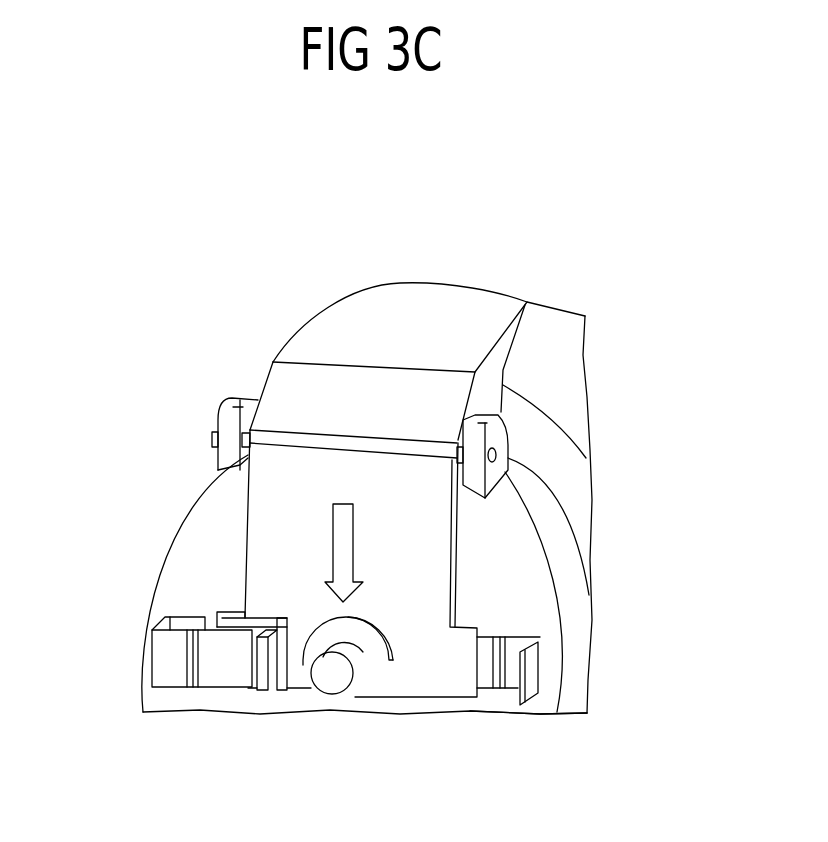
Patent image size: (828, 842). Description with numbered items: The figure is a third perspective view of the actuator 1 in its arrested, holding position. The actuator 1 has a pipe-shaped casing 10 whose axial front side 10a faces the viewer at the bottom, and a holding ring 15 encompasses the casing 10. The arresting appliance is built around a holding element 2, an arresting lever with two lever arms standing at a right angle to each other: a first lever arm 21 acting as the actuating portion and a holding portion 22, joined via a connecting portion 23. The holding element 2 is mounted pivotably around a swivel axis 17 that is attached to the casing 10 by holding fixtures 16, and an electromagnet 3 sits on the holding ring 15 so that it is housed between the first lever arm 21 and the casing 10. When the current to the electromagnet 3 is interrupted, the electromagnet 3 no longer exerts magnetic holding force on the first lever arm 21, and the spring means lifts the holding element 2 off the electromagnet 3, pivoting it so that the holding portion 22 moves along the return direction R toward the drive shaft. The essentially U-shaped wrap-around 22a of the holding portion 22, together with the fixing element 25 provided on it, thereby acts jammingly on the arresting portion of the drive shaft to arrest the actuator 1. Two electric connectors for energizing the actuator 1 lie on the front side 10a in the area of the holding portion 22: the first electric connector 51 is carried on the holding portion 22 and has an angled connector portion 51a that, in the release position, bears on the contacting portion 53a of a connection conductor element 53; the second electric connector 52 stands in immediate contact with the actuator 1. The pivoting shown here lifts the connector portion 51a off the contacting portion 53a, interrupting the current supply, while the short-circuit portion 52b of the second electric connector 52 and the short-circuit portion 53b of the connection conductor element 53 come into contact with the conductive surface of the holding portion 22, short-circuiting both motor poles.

The actuator 1 is at (592, 332).
The casing 10 is at (570, 372).
The axial front side 10a is at (547, 703).
The holding ring 15 is at (568, 473).
The holding element 2 is at (265, 347).
The first lever arm 21 is at (435, 300).
The connecting portion 23 is at (327, 382).
The electromagnet 3 is at (497, 403).
The holding fixtures 16 is at (227, 422).
The swivel axis 17 is at (212, 437).
The holding portion 22 is at (262, 530).
The wrap-around 22a is at (370, 668).
The fixing element 25 is at (374, 660).
The return direction R is at (347, 549).
The first electric connector 51 is at (268, 673).
The connector portion 51a is at (247, 633).
The second electric connector 52 is at (533, 668).
The short-circuit portion 52b is at (486, 683).
The connection conductor element 53 is at (172, 673).
The contacting portion 53a is at (227, 677).
The short-circuit portion 53b is at (197, 618).